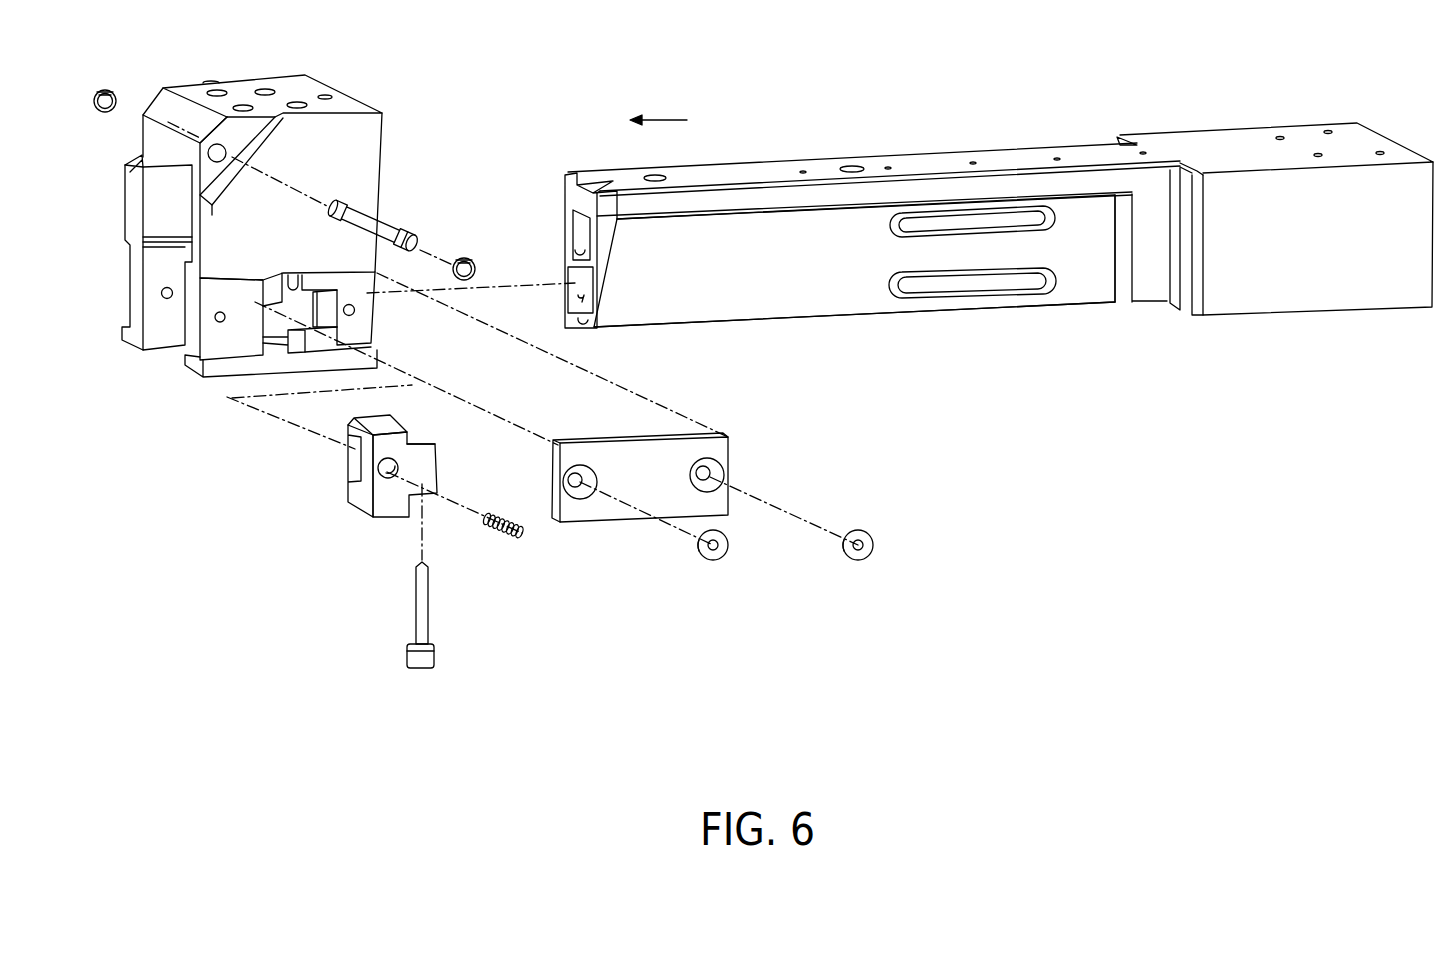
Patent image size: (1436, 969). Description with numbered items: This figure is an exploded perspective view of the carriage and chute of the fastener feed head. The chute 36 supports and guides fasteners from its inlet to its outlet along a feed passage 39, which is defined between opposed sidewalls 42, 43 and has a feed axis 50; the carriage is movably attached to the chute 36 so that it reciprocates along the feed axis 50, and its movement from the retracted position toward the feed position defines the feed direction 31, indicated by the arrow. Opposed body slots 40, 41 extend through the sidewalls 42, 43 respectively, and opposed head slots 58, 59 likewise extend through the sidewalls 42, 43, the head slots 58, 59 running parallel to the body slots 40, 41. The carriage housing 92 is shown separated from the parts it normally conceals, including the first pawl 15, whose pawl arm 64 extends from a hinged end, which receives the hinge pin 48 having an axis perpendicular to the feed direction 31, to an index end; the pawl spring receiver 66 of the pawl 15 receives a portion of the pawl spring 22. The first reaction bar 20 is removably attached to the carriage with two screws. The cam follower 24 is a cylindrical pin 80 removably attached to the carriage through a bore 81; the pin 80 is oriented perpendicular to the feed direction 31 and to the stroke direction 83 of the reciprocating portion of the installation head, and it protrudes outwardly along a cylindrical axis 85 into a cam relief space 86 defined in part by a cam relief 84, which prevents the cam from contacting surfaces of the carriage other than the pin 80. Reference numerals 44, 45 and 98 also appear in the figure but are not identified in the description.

The first pawl 15 is at (410, 496).
The first reaction bar 20 is at (617, 513).
The pawl spring 22 is at (515, 543).
The cam follower 24 is at (398, 211).
The feed direction 31 is at (672, 117).
The chute 36 is at (833, 242).
The feed passage 39 is at (575, 305).
The body slot 40 is at (1017, 294).
The body slot 41 is at (987, 288).
The sidewall 42 is at (733, 268).
The sidewall 43 is at (568, 218).
The foot 44 is at (587, 323).
The semicircular notch 45 is at (577, 252).
The hinge pin 48 is at (434, 661).
The feed axis 50 is at (527, 285).
The head slot 58 is at (1050, 205).
The head slot 59 is at (1017, 210).
The pawl arm 64 is at (416, 467).
The pawl spring receiver 66 is at (385, 484).
The cylindrical pin 80 is at (360, 206).
The bore 81 is at (221, 158).
The stroke direction 83 is at (92, 186).
The cam relief 84 is at (217, 190).
The cylindrical axis 85 is at (466, 257).
The cam relief space 86 is at (210, 181).
The carriage housing 92 is at (268, 220).
The screw 98 is at (713, 556).